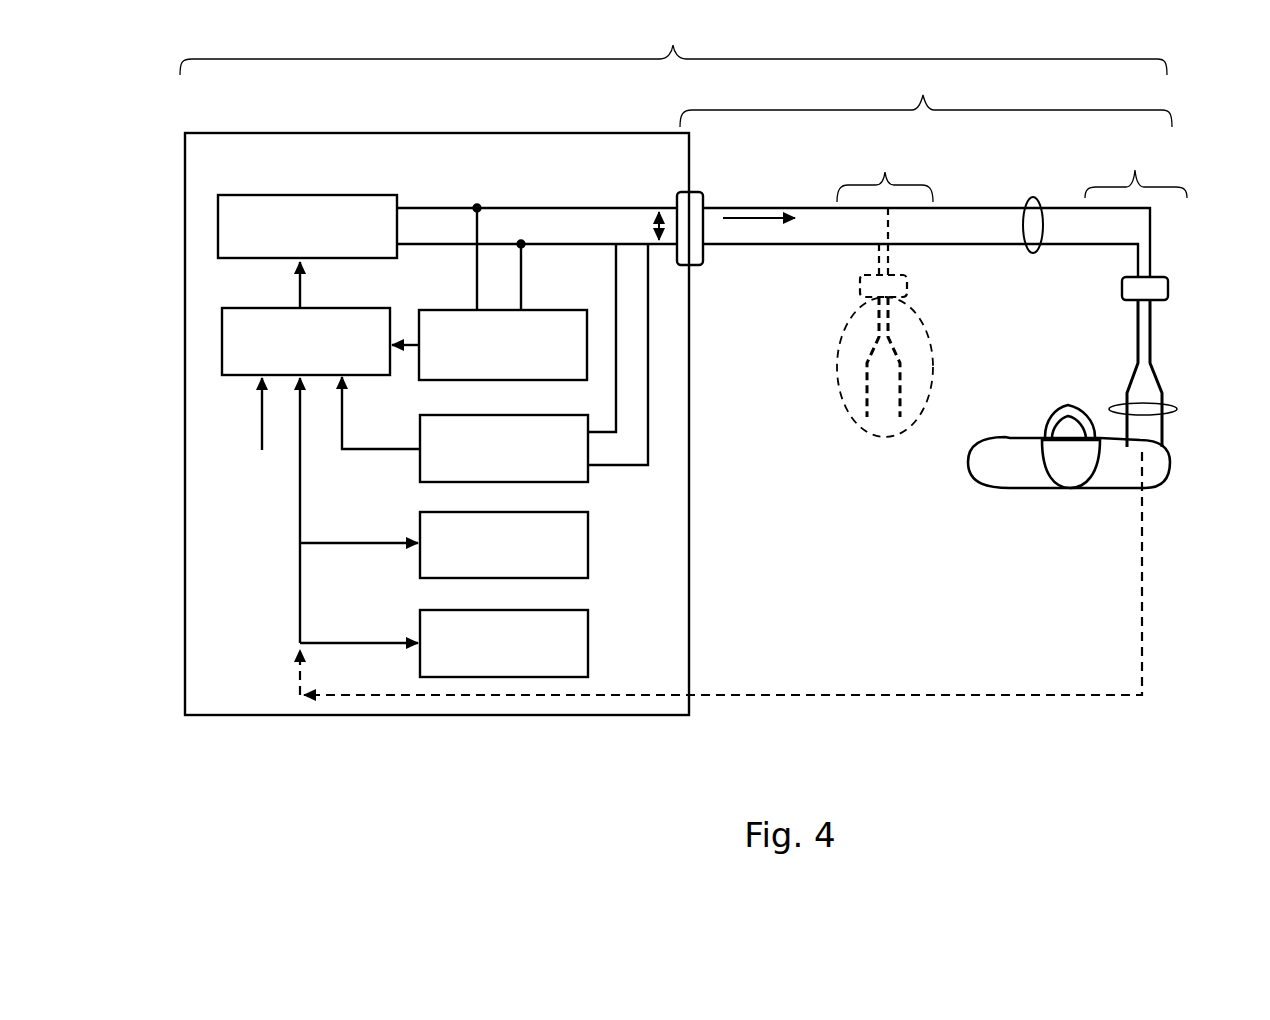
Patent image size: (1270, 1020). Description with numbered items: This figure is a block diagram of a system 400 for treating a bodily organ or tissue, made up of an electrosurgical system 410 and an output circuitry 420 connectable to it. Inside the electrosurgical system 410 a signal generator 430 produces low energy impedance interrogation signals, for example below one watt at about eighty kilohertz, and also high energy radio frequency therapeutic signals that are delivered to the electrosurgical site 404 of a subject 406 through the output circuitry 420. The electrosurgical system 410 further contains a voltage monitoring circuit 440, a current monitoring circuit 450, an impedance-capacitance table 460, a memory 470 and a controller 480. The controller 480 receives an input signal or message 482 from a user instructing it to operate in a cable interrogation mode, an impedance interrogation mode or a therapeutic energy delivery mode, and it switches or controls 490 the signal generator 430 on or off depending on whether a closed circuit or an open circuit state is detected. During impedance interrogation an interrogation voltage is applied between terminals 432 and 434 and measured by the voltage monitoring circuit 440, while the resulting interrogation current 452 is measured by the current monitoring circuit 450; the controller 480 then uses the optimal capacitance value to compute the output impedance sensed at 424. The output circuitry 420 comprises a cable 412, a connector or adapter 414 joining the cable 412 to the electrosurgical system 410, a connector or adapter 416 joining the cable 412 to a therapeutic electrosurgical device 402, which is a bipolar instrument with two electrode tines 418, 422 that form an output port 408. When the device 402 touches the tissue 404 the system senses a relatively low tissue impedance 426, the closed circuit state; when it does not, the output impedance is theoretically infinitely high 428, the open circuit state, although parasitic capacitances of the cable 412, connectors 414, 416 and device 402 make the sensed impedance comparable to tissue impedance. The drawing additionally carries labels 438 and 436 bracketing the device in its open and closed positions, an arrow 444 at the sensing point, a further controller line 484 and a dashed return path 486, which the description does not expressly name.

The system 400 is at (673, 44).
The therapeutic electrosurgical device 402 is at (850, 417).
The bodily organ or tissue 404 is at (1150, 455).
The subject 406 is at (1040, 499).
The output port 408 is at (1103, 408).
The electrosurgical system 410 is at (559, 133).
The cable 412 is at (1033, 198).
The connector or adapter 414 is at (703, 192).
The connector or adapter 416 is at (907, 286).
The electrode tine 418 is at (866, 378).
The output circuitry 420 is at (926, 97).
The electrode tine 422 is at (900, 388).
The output impedance sensing point 424 is at (656, 226).
The tissue impedance 426 is at (1217, 450).
The infinitely high output impedance 428 is at (880, 475).
The signal generator 430 is at (286, 195).
The terminal 432 is at (477, 208).
The terminal 434 is at (521, 244).
The probe in contact position 436 is at (1136, 170).
The probe in open position 438 is at (885, 209).
The voltage monitoring circuit 440 is at (543, 310).
The voltage measurement point 444 is at (654, 198).
The current monitoring circuit 450 is at (420, 437).
The interrogation current 452 is at (762, 220).
The impedance-capacitance table 460 is at (420, 540).
The memory 470 is at (420, 640).
The controller 480 is at (280, 308).
The input signal or message 482 is at (262, 407).
The controller input line 484 is at (300, 452).
The feedback path 486 is at (927, 695).
The signal generator control 490 is at (301, 290).